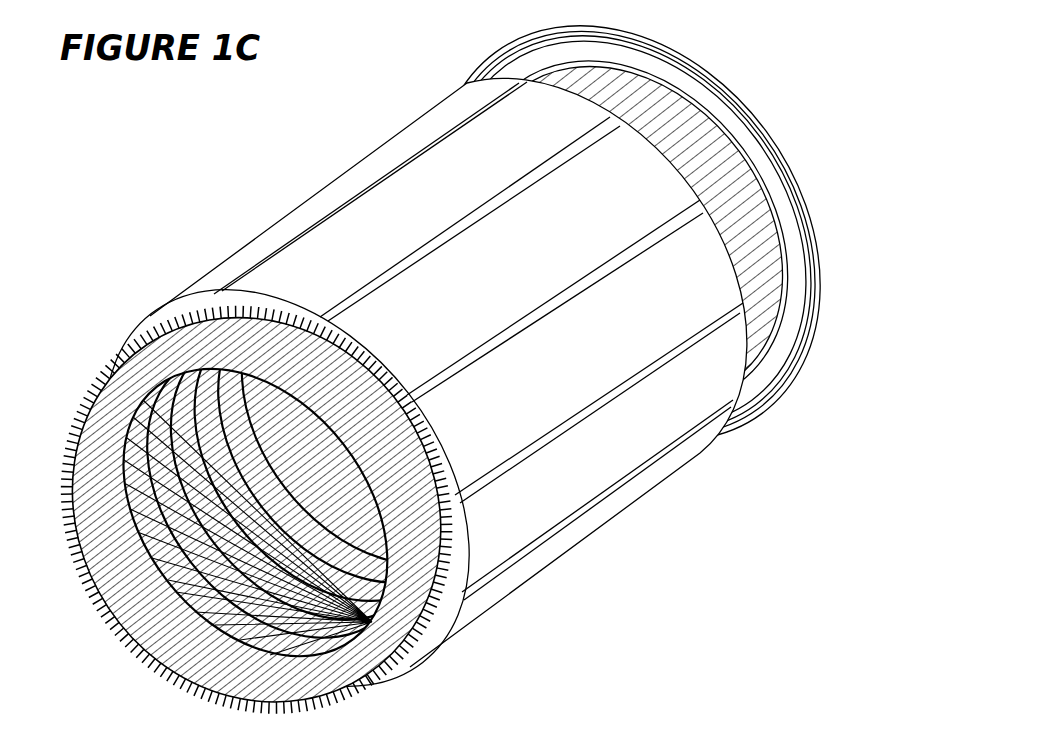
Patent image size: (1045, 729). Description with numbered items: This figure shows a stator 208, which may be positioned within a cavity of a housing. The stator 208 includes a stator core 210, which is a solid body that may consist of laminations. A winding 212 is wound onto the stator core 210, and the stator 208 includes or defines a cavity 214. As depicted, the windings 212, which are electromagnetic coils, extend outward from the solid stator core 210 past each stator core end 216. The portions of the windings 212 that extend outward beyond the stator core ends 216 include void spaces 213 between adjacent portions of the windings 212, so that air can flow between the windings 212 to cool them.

The stator 208 is at (164, 126).
The stator core 210 is at (317, 190).
The winding 212 is at (263, 318).
The void spaces 213 is at (250, 319).
The cavity 214 is at (213, 550).
The stator core end 216 is at (476, 80).